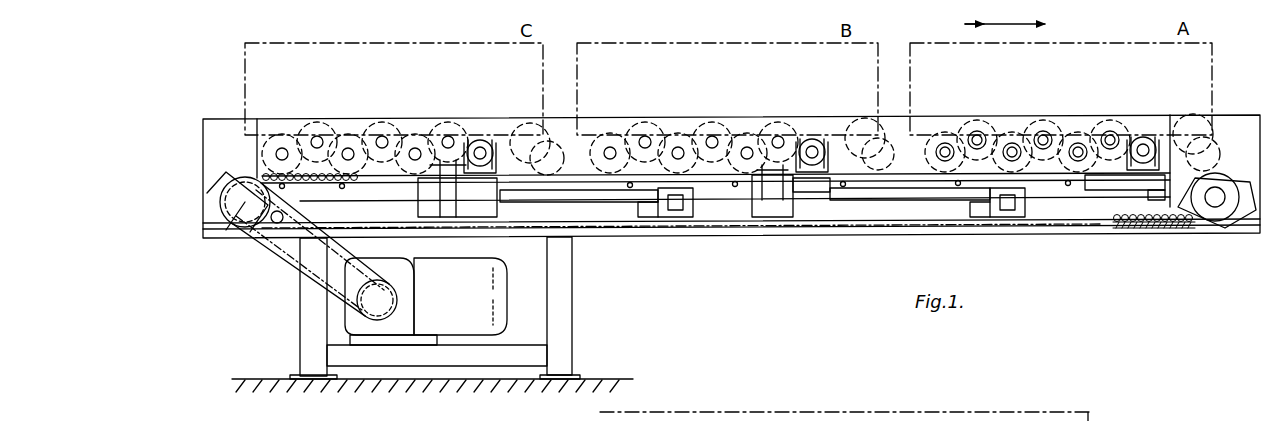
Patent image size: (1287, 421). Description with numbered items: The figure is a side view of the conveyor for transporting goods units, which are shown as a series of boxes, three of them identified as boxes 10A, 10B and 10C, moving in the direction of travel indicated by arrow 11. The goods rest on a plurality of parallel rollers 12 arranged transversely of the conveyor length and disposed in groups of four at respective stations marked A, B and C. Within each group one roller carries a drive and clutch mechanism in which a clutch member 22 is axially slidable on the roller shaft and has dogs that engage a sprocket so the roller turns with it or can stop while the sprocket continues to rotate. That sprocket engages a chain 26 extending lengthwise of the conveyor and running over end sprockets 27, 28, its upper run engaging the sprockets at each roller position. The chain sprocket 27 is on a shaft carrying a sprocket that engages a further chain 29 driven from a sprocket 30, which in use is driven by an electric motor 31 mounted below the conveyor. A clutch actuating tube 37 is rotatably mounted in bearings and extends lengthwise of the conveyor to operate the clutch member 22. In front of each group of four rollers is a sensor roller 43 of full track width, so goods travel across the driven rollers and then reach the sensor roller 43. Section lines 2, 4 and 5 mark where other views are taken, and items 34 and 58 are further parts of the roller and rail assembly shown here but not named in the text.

The box 10A is at (1063, 45).
The box 10B is at (712, 50).
The box 10C is at (372, 50).
The arrow 11 is at (975, 26).
The rollers 12 is at (270, 143).
The upper rollers 34 is at (445, 126).
The clutch member 22 is at (1147, 137).
The sensor roller 43 is at (863, 130).
The section line 2 is at (812, 117).
The section line 4 is at (778, 117).
The section line 5 is at (645, 117).
The guide rail 58 is at (604, 210).
The clutch actuating tube 37 is at (805, 186).
The chain 26 is at (1168, 223).
The end sprocket 28 is at (1215, 207).
The chain sprocket 27 is at (240, 215).
The chain 29 is at (282, 258).
The sprocket 30 is at (380, 313).
The electric motor 31 is at (451, 325).